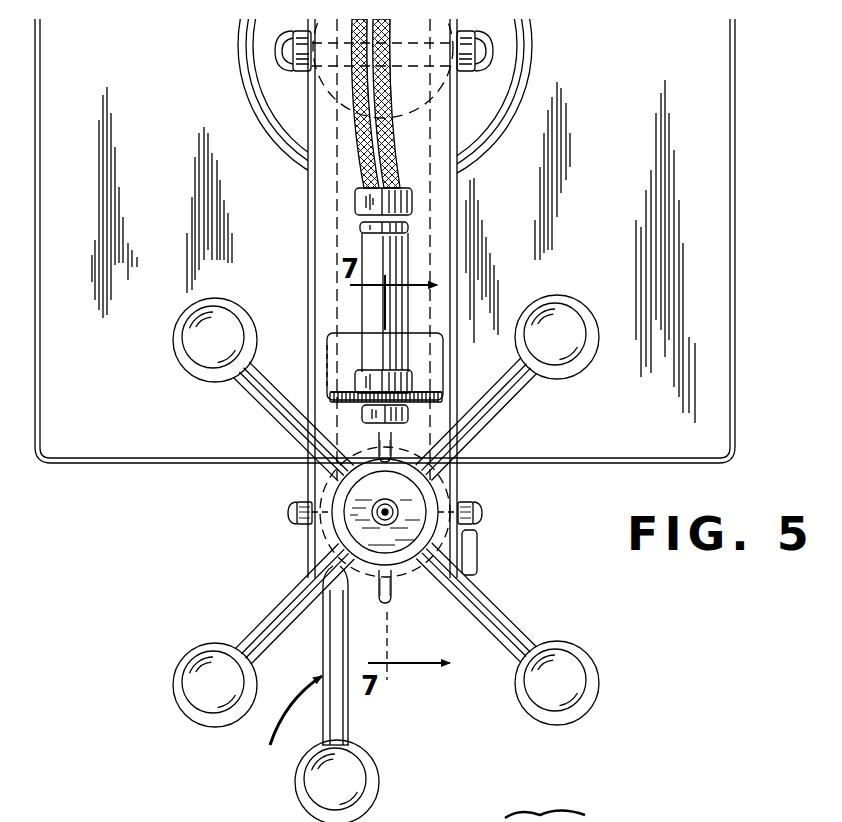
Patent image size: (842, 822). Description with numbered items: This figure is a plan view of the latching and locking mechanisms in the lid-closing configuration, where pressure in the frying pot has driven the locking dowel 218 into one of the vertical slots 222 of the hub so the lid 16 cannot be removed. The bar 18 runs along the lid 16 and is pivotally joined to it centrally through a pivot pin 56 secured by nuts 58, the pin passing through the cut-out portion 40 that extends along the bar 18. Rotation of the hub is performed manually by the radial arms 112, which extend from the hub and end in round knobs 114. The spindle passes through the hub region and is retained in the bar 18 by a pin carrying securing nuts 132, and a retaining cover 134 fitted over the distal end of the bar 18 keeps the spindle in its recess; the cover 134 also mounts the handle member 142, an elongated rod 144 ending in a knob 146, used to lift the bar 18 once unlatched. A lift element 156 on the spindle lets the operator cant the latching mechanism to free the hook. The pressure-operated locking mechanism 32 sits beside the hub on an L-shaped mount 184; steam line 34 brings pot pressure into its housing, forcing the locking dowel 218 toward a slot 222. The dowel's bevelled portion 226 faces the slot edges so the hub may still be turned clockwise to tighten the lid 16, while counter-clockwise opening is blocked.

The lid 16 is at (622, 218).
The bar 18 is at (445, 205).
The locking mechanism 32 is at (372, 250).
The steam line 34 is at (400, 160).
The cut-out portion 40 is at (340, 102).
The pivot pin 56 is at (418, 50).
The nuts 58 is at (275, 58).
The radial arms 112 is at (263, 398).
The round knobs 114 is at (198, 360).
The securing nuts 132 is at (298, 513).
The retaining cover 134 is at (477, 556).
The handle member 142 is at (279, 723).
The elongated rod 144 is at (350, 722).
The knob 146 is at (380, 785).
The lift element 156 is at (388, 604).
The L-shaped mount 184 is at (336, 348).
The locking dowel 218 is at (440, 410).
The vertical slots 222 is at (394, 452).
The bevelled portion 226 is at (378, 450).